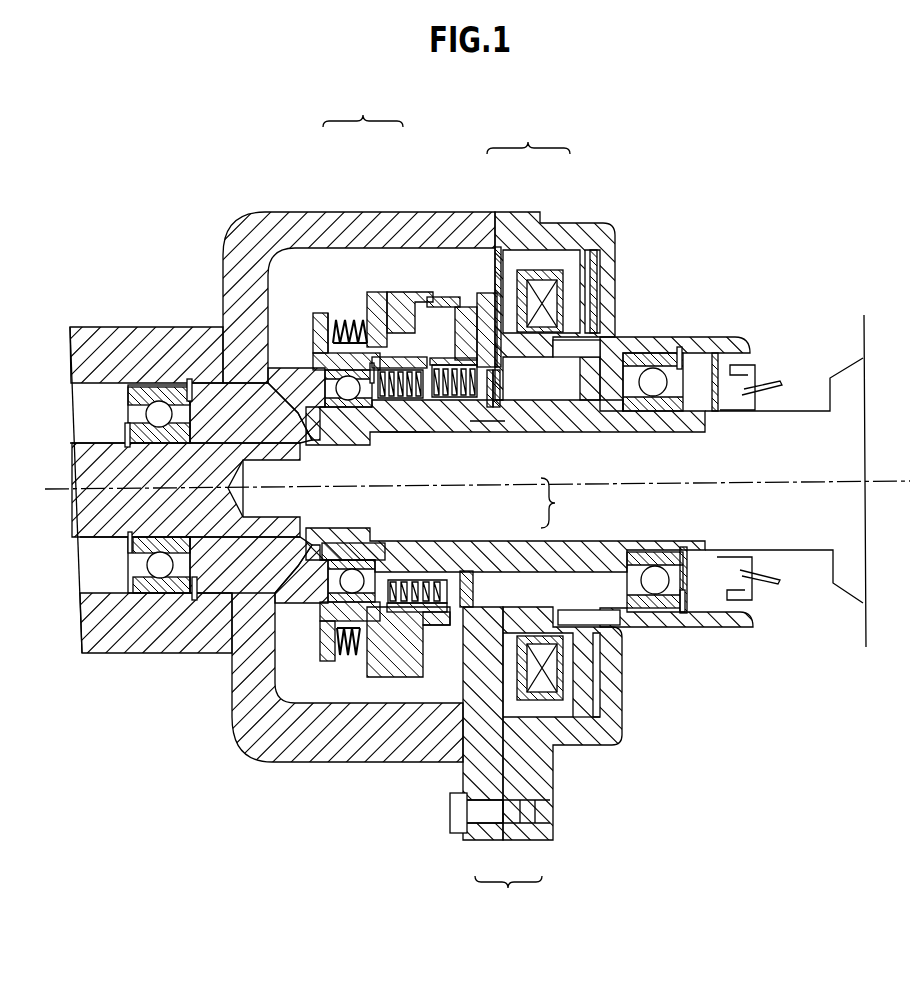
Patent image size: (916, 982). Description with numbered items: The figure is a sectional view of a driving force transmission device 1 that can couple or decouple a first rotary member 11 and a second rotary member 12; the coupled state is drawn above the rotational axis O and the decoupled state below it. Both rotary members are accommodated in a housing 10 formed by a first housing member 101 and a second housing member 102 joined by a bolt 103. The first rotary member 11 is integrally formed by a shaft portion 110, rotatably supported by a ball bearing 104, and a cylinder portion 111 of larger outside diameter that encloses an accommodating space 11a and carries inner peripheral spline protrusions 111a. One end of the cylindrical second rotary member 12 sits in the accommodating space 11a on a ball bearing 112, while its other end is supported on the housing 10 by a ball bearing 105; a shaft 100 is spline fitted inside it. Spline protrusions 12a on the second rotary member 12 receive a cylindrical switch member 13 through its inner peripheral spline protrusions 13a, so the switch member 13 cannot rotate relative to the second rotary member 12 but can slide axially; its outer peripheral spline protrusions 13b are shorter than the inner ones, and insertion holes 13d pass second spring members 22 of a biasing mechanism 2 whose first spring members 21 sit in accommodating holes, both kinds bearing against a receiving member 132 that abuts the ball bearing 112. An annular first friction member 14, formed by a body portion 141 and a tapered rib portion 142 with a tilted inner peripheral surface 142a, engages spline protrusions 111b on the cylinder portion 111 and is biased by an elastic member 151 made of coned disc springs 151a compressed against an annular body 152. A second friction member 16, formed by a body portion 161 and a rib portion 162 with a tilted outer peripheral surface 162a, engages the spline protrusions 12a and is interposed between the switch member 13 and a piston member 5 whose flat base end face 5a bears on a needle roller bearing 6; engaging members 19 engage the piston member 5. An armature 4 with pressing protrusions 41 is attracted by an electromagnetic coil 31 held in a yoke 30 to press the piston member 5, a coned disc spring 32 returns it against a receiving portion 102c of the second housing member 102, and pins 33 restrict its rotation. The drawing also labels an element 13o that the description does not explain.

The driving force transmission device 1 is at (95, 205).
The biasing mechanism 2 is at (556, 503).
The armature 4 is at (565, 290).
The piston member 5 is at (600, 350).
The base end face 5a is at (490, 422).
The needle roller bearing 6 is at (470, 592).
The housing 10 is at (508, 890).
The first rotary member 11 is at (82, 443).
The accommodating space 11a is at (223, 318).
The second rotary member 12 is at (697, 552).
The spline protrusions 12a is at (412, 434).
The switch member 13 is at (472, 430).
The inner peripheral spline protrusions 13a is at (423, 582).
The outer peripheral spline protrusions 13b is at (403, 615).
The insertion holes 13d is at (433, 600).
The spring 13o is at (445, 400).
The first friction member 14 is at (363, 107).
The second friction member 16 is at (528, 134).
The engaging members 19 is at (640, 358).
The first spring members 21 is at (489, 440).
The second spring members 22 is at (475, 570).
The yoke 30 is at (555, 228).
The electromagnetic coil 31 is at (558, 690).
The coned disc spring 32 is at (598, 258).
The pins 33 is at (598, 620).
The pressing protrusions 41 is at (598, 352).
The shaft 100 is at (853, 411).
The first housing member 101 is at (478, 840).
The second housing member 102 is at (528, 840).
The receiving portion 102c is at (602, 712).
The bolt 103 is at (455, 814).
The ball bearing 104 is at (130, 582).
The ball bearing 105 is at (720, 556).
The shaft portion 110 is at (222, 447).
The cylinder portion 111 is at (318, 310).
The inner peripheral spline protrusions 111a is at (418, 612).
The spline protrusions 111b is at (331, 320).
The ball bearing 112 is at (348, 409).
The receiving member 132 is at (383, 400).
The body portion 141 is at (374, 300).
The rib portion 142 is at (398, 318).
The inner peripheral surface 142a is at (430, 300).
The elastic member 151 is at (338, 668).
The coned disc springs 151a is at (352, 658).
The annular body 152 is at (336, 322).
The body portion 161 is at (500, 280).
The rib portion 162 is at (487, 300).
The outer peripheral surface 162a is at (462, 310).
The rotational axis O is at (890, 478).